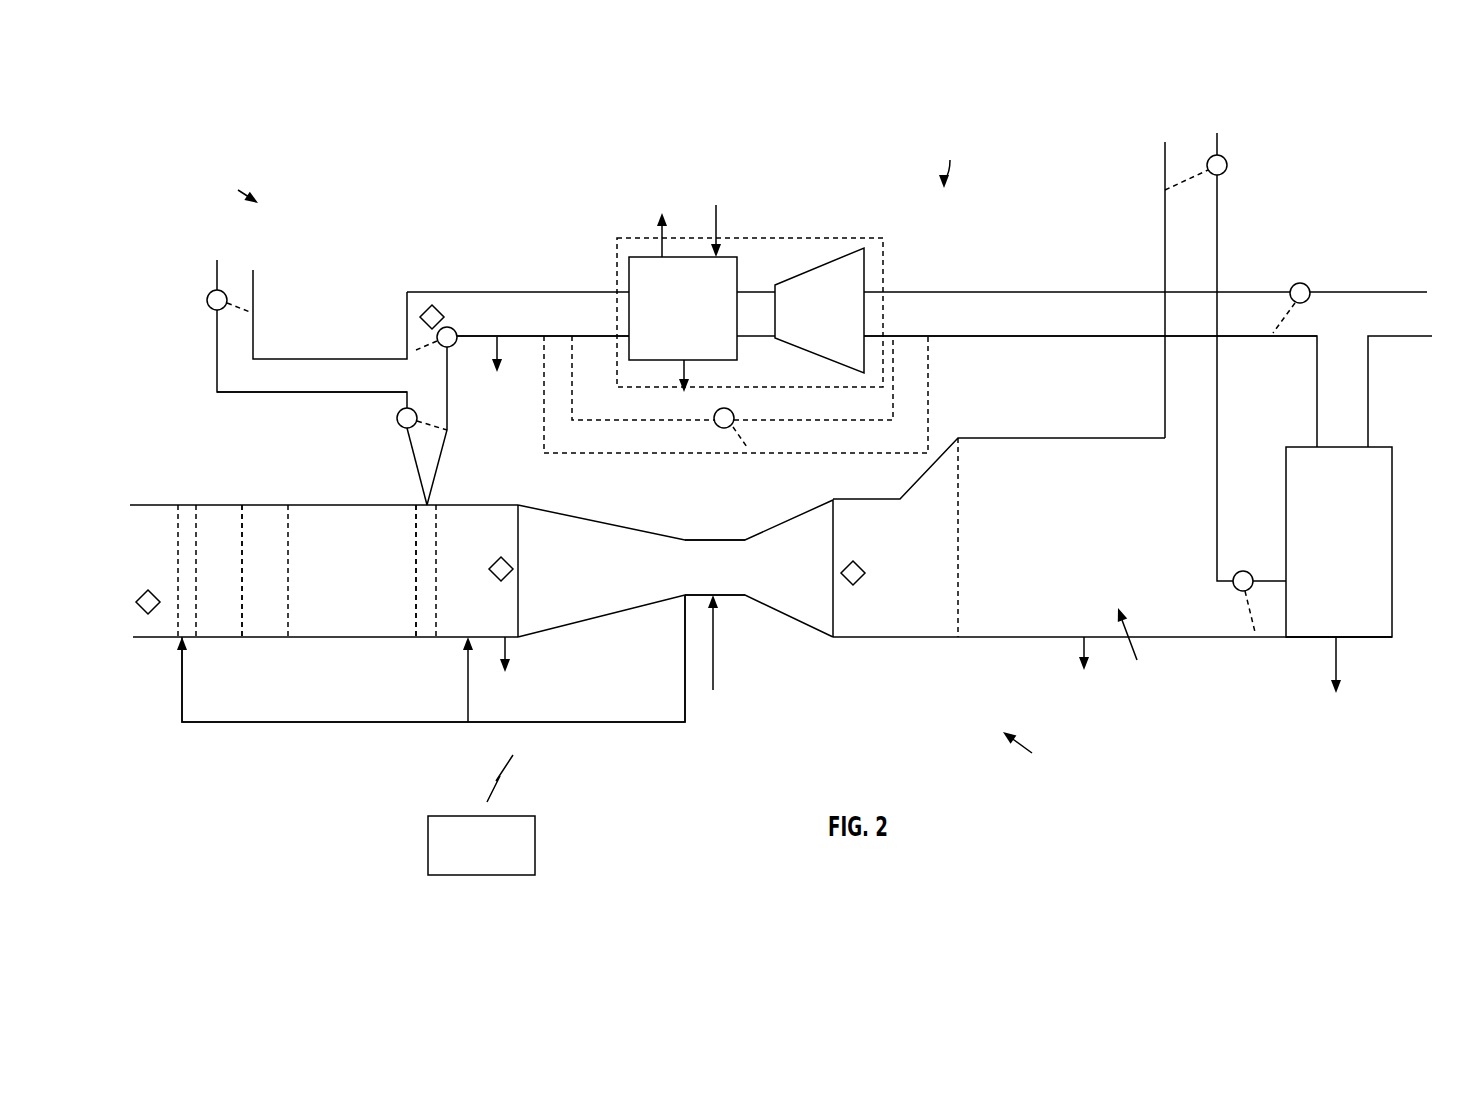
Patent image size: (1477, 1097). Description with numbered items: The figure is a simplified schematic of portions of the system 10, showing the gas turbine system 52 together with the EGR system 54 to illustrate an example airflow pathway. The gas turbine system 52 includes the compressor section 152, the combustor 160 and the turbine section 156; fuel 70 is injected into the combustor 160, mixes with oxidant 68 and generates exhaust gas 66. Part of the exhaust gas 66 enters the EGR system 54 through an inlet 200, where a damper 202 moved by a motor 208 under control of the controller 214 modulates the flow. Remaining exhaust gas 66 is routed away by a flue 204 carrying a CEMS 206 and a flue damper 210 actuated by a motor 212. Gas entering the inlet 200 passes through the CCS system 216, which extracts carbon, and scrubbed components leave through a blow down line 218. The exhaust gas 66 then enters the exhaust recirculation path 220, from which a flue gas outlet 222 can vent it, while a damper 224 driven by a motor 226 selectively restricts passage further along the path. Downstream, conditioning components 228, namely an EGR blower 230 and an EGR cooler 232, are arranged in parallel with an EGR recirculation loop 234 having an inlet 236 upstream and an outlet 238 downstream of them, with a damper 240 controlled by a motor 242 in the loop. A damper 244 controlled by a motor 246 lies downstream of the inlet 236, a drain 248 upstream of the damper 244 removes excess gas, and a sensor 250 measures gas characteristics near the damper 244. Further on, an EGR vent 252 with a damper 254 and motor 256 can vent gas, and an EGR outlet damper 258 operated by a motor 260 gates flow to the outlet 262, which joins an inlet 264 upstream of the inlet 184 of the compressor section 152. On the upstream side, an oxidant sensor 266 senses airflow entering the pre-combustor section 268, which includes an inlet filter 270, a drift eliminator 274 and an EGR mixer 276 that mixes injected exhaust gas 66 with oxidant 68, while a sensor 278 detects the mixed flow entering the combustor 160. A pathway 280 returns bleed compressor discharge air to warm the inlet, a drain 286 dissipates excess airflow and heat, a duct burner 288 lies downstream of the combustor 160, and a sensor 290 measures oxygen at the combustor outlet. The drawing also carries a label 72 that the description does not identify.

The system 10 is at (234, 189).
The gas turbine system 52 is at (1031, 752).
The EGR system 54 is at (947, 156).
The exhaust gas 66 is at (1112, 565).
The oxidant 68 is at (137, 548).
The fuel 70 is at (713, 677).
The filter section 72 is at (295, 505).
The compressor section 152 is at (605, 615).
The turbine section 156 is at (776, 527).
The combustor 160 is at (743, 597).
The inlet 184 is at (521, 518).
The inlet 200 is at (1270, 640).
The damper 202 is at (1246, 620).
The flue 204 is at (1163, 238).
The continuous emission monitoring system 206 is at (1210, 215).
The motor 208 is at (1249, 572).
The flue damper 210 is at (1165, 183).
The motor 212 is at (1227, 165).
The controller 214 is at (540, 843).
The carbon capture and storage system 216 is at (1395, 573).
The blow down line 218 is at (1340, 657).
The exhaust recirculation path 220 is at (1000, 292).
The flue gas outlet 222 is at (1415, 325).
The damper 224 is at (1283, 336).
The motor 226 is at (1308, 287).
The conditioning components 228 is at (843, 238).
The EGR blower 230 is at (813, 270).
The EGR cooler 232 is at (643, 256).
The EGR recirculation loop 234 is at (657, 453).
The inlet 236 is at (557, 336).
The outlet 238 is at (913, 337).
The damper 240 is at (760, 447).
The motor 242 is at (724, 428).
The damper 244 is at (415, 350).
The motor 246 is at (447, 326).
The drain 248 is at (493, 372).
The sensor 250 is at (420, 312).
The EGR vent 252 is at (288, 392).
The damper 254 is at (240, 303).
The motor 256 is at (207, 300).
The EGR outlet damper 258 is at (420, 428).
The motor 260 is at (397, 420).
The outlet 262 is at (438, 503).
The inlet 264 is at (417, 506).
The oxidant sensor 266 is at (136, 604).
The pre-combustor section 268 is at (225, 505).
The inlet filter 270 is at (242, 603).
The drift eliminator 274 is at (457, 622).
The EGR mixer 276 is at (416, 598).
The sensor 278 is at (512, 577).
The pathway 280 is at (385, 722).
The drain 286 is at (508, 668).
The duct burner 288 is at (1077, 665).
The sensor 290 is at (866, 580).